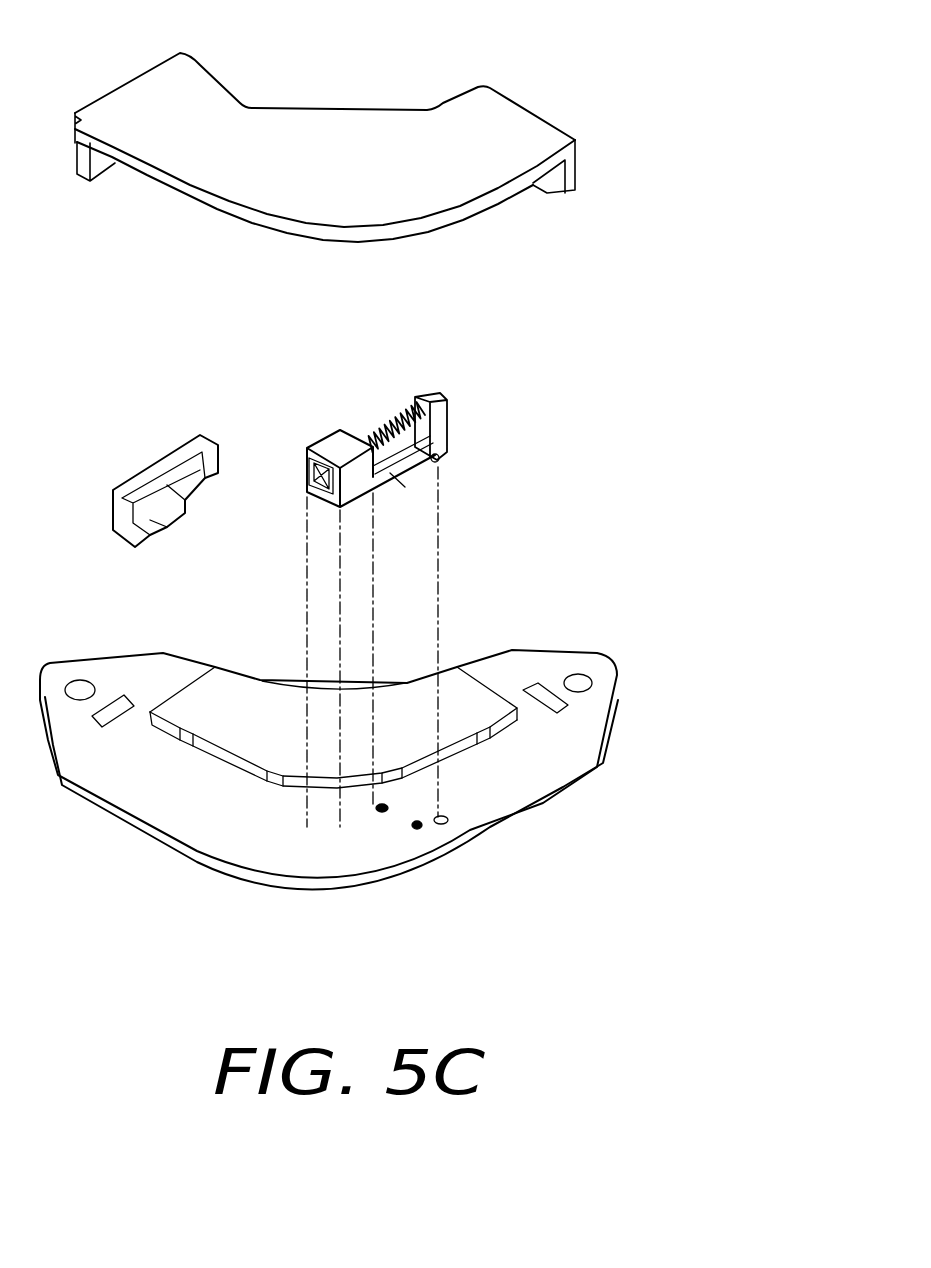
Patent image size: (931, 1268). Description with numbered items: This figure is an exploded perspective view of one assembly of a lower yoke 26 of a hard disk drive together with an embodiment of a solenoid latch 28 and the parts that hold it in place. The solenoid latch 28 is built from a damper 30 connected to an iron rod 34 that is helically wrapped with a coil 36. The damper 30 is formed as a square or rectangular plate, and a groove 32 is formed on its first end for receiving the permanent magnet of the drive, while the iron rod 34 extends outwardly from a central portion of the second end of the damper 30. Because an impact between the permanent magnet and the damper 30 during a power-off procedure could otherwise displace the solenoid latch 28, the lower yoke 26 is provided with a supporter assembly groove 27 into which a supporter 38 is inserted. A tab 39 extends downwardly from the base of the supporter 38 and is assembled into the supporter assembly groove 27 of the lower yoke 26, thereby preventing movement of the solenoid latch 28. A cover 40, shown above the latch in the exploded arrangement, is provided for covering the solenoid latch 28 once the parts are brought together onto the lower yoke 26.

The lower yoke 26 is at (530, 787).
The supporter assembly groove 27 is at (450, 822).
The solenoid latch 28 is at (470, 506).
The damper 30 is at (333, 440).
The groove 32 is at (307, 478).
The iron rod 34 is at (422, 396).
The coil 36 is at (381, 426).
The supporter 38 is at (447, 412).
The tab 39 is at (439, 459).
The cover 40 is at (527, 117).